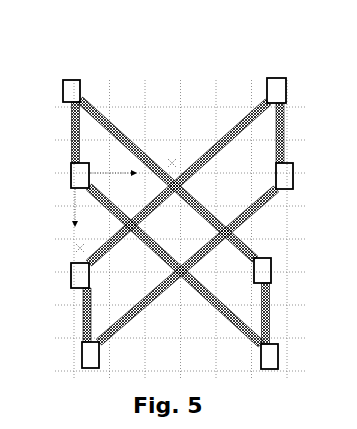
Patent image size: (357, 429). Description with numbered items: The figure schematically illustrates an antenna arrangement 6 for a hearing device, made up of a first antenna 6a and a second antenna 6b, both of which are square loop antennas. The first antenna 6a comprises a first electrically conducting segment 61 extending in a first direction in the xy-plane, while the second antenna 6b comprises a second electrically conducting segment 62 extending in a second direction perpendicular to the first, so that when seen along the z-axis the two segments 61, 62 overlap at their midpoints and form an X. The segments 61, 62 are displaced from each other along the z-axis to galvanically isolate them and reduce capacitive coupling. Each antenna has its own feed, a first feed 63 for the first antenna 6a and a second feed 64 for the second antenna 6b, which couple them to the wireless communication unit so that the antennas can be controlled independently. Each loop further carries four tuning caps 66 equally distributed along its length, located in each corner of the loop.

The antenna arrangement 6 is at (150, 76).
The first electrically conducting segment 61 is at (92, 98).
The second electrically conducting segment 62 is at (248, 110).
The first feed 63 is at (66, 126).
The second feed 64 is at (290, 127).
The tuning caps 66 is at (70, 90).
The first antenna 6a is at (267, 310).
The second antenna 6b is at (260, 194).